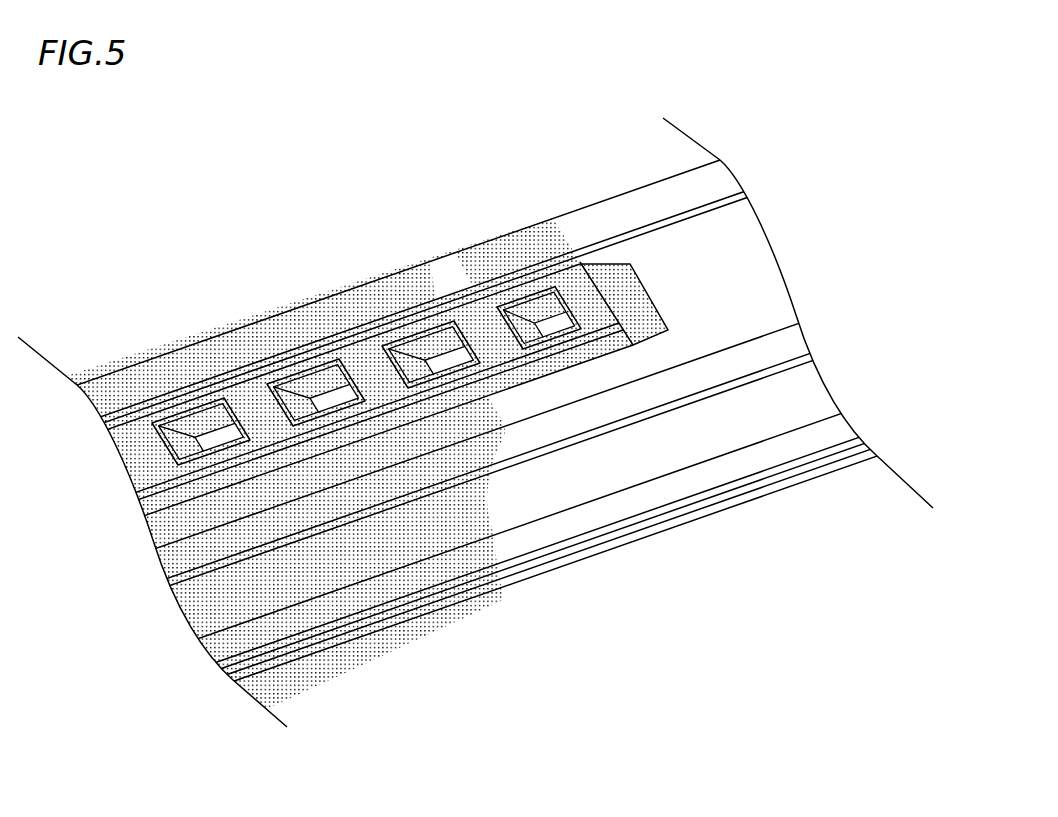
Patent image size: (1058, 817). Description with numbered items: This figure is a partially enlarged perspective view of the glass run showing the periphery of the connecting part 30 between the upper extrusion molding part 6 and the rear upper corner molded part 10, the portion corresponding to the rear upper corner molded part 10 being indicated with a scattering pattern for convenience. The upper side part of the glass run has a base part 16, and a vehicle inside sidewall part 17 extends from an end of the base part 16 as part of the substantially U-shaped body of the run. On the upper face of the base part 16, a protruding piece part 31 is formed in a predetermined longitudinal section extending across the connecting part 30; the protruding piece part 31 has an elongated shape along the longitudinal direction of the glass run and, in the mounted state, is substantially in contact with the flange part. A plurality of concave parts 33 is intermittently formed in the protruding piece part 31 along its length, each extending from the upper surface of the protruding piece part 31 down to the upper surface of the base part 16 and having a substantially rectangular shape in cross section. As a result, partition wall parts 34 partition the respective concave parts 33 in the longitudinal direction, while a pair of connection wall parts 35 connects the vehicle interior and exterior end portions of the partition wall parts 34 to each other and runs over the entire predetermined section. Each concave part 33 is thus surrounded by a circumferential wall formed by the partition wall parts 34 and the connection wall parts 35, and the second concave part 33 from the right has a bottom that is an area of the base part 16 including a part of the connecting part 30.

The rear upper corner molded part 10 is at (110, 325).
The upper extrusion molding part 6 is at (494, 203).
The base part 16 is at (707, 263).
The vehicle inside sidewall part 17 is at (713, 436).
The connecting part 30 is at (422, 387).
The protruding piece part 31 is at (250, 393).
The concave part 33 is at (345, 335).
The partition wall part 34 is at (493, 337).
The connection wall part 35 is at (450, 330).